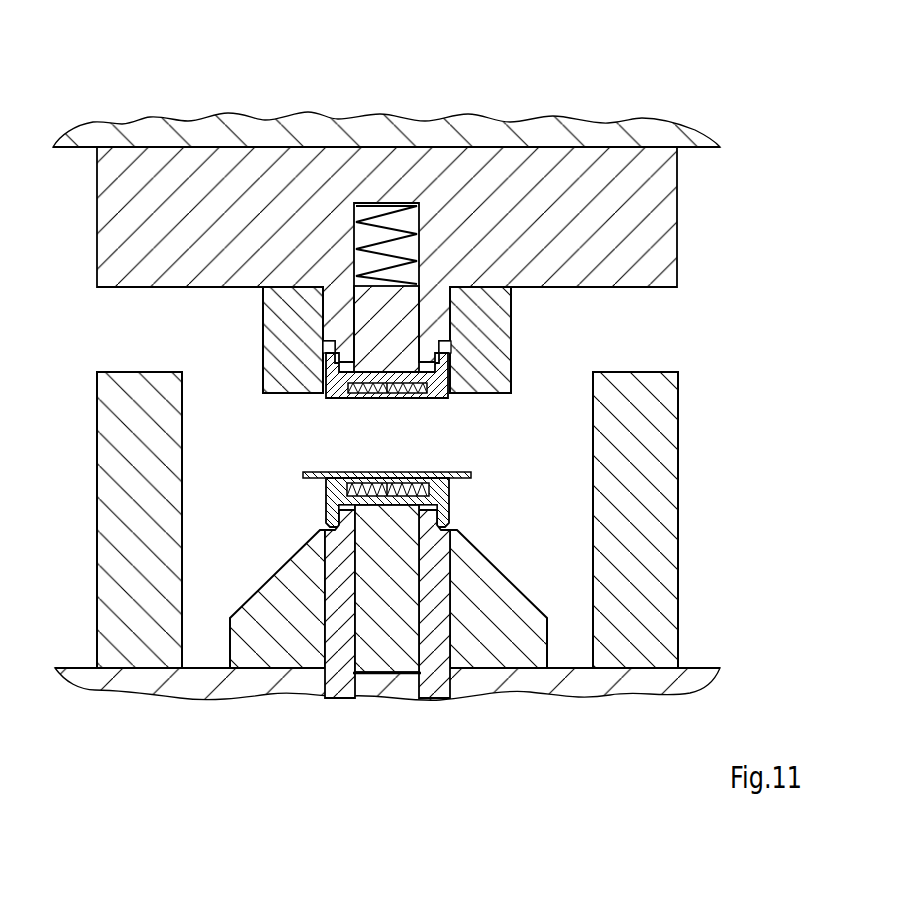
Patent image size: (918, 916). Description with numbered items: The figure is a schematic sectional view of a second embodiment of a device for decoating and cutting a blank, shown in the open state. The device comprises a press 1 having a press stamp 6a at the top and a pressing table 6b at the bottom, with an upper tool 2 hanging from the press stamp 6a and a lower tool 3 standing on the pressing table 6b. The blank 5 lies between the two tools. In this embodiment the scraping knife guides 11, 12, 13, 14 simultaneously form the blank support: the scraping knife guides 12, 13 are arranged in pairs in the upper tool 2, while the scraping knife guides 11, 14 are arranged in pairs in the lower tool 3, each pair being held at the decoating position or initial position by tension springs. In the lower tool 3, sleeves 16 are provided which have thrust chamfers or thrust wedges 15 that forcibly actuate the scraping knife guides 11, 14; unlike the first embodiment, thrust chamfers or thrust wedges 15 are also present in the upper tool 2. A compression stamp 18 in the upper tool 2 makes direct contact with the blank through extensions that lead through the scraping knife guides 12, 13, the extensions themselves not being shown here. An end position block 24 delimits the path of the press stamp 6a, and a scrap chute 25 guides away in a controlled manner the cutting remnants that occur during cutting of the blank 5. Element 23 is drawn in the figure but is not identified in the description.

The press 1 is at (680, 84).
The upper tool 2 is at (665, 217).
The lower tool 3 is at (712, 595).
The blank 5 is at (363, 471).
The press stamp 6a is at (590, 133).
The pressing table 6b is at (587, 683).
The scraping knife guide 11 is at (390, 502).
The scraping knife guide 12 is at (389, 391).
The scraping knife guide 13 is at (446, 398).
The scraping knife guide 14 is at (449, 495).
The thrust chamfers or thrust wedges 15 is at (327, 364).
The sleeves 16 is at (345, 647).
The compression stamp 18 is at (398, 333).
The insert element 23 is at (408, 399).
The end position block 24 is at (140, 645).
The scrap chute 25 is at (258, 655).